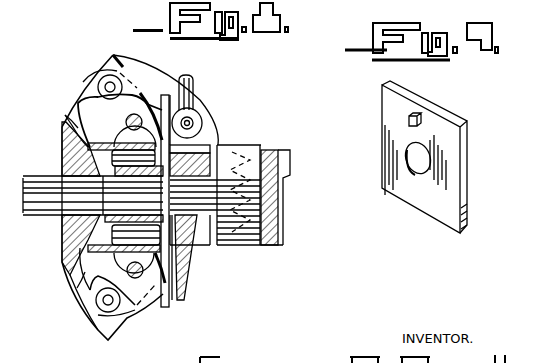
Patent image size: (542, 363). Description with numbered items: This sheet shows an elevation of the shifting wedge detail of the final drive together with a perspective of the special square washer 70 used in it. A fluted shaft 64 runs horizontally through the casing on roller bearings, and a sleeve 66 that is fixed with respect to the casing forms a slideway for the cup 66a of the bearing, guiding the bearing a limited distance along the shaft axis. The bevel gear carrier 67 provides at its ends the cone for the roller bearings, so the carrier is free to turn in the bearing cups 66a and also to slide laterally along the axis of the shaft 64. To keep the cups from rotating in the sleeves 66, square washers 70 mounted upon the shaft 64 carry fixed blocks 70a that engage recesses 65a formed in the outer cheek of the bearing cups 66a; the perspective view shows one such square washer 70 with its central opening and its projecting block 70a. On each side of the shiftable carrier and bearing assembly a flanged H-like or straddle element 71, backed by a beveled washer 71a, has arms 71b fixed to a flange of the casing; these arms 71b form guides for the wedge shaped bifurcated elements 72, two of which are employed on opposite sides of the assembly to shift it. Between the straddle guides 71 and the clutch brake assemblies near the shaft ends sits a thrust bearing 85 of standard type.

In FIG. 8, the fluted shaft 64 is at (50, 203).
In FIG. 8, the sleeve 66 is at (77, 288).
In FIG. 8, the cup of the bearing 66a is at (65, 115).
In FIG. 8, the bevel gear carrier 67 is at (67, 147).
In FIG. 8, the square washer 70 is at (165, 303).
In FIG. 9, the square washer 70 is at (395, 175).
In FIG. 9, the fixed block 70a is at (408, 118).
In FIG. 8, the flanged H-like or straddle element 71 is at (207, 133).
In FIG. 8, the beveled washer 71a is at (217, 250).
In FIG. 8, the arm 71b is at (160, 84).
In FIG. 8, the wedge shaped bifurcated element 72 is at (186, 274).
In FIG. 8, the recess 65a is at (158, 82).
In FIG. 8, the thrust bearing 85 is at (257, 148).